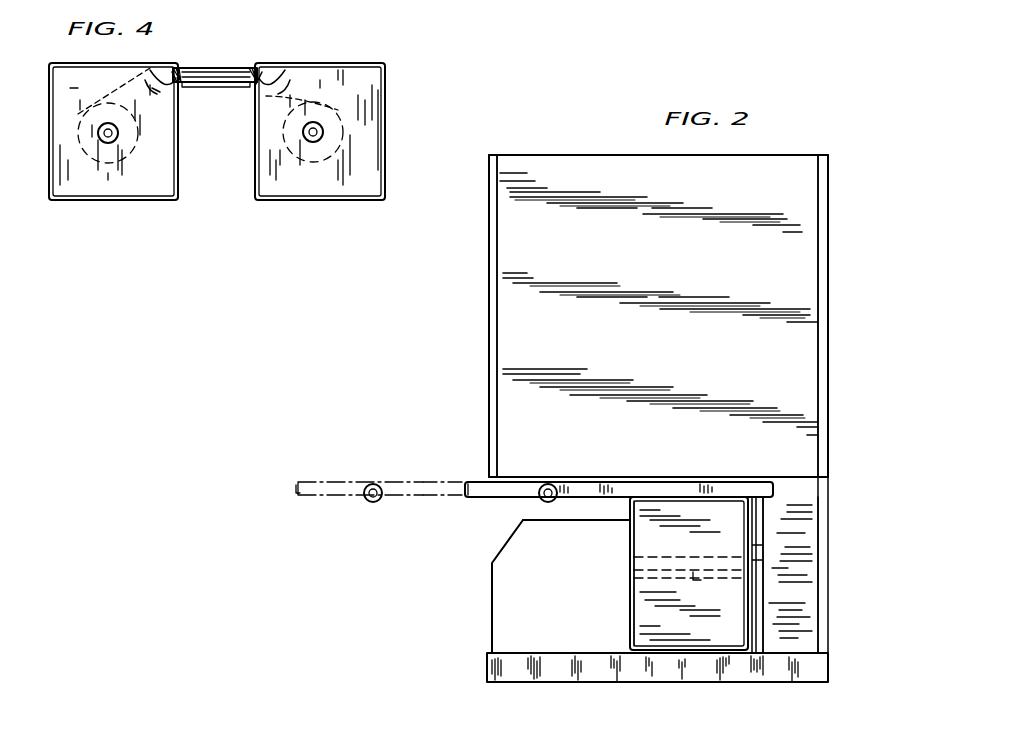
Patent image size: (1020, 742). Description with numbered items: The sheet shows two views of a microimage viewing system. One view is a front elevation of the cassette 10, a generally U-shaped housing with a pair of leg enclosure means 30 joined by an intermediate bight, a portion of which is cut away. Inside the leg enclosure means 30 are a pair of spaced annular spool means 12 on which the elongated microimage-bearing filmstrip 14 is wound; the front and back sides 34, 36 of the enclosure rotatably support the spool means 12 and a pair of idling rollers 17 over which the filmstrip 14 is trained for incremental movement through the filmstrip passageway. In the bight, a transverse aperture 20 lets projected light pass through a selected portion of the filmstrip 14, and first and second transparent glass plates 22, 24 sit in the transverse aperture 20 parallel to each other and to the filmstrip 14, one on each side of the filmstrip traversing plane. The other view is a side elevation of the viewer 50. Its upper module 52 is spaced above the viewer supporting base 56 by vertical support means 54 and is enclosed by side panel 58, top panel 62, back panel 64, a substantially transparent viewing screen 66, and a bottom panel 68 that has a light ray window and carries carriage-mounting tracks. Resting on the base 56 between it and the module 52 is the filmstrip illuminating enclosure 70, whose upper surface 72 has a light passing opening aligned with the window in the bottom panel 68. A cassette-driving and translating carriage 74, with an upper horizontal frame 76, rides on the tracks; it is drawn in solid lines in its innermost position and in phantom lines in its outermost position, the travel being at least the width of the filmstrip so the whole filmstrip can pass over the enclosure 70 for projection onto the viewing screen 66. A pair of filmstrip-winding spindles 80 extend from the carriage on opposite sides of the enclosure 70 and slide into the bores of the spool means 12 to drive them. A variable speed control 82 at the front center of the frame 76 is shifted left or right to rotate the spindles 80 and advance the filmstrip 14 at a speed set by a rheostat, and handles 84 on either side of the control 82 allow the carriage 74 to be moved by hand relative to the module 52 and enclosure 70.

In FIG. 4, the cassette 10 is at (237, 124).
In FIG. 2, the cassette 10 is at (694, 519).
In FIG. 4, the spool means 12 is at (303, 134).
In FIG. 2, the spool means 12 is at (654, 553).
In FIG. 4, the filmstrip 14 is at (302, 80).
In FIG. 4, the idling rollers 17 is at (140, 50).
In FIG. 4, the transverse aperture 20 is at (234, 49).
In FIG. 4, the first glass plate 22 is at (248, 68).
In FIG. 4, the second glass plate 24 is at (230, 84).
In FIG. 4, the leg enclosure means 30 is at (157, 186).
In FIG. 4, the front side 34 is at (91, 99).
In FIG. 2, the front side 34 is at (628, 604).
In FIG. 2, the back side 36 is at (753, 536).
In FIG. 2, the viewer 50 is at (559, 406).
In FIG. 2, the upper module 52 is at (659, 375).
In FIG. 2, the vertical support means 54 is at (810, 620).
In FIG. 2, the viewer supporting base 56 is at (594, 676).
In FIG. 2, the side panel 58 is at (614, 267).
In FIG. 2, the top panel 62 is at (599, 154).
In FIG. 2, the back panel 64 is at (828, 235).
In FIG. 2, the viewing screen 66 is at (489, 276).
In FIG. 2, the bottom panel 68 is at (682, 477).
In FIG. 2, the filmstrip illuminating enclosure 70 is at (528, 569).
In FIG. 2, the upper surface 72 is at (536, 517).
In FIG. 2, the carriage 74 is at (465, 478).
In FIG. 2, the horizontal frame 76 is at (350, 465).
In FIG. 2, the filmstrip-winding spindles 80 is at (693, 578).
In FIG. 2, the variable speed control 82 is at (296, 486).
In FIG. 2, the handles 84 is at (376, 503).